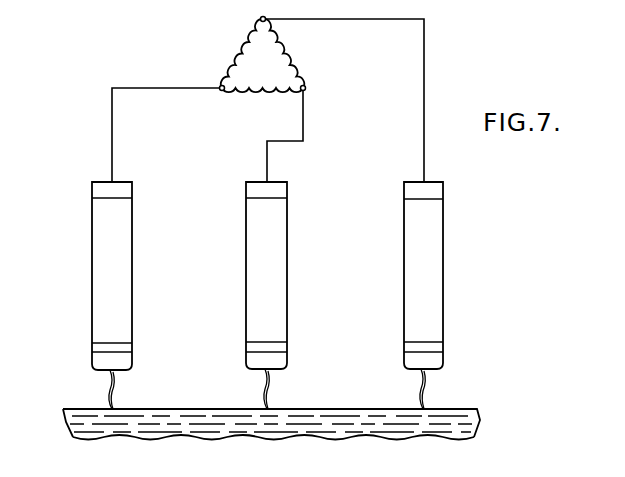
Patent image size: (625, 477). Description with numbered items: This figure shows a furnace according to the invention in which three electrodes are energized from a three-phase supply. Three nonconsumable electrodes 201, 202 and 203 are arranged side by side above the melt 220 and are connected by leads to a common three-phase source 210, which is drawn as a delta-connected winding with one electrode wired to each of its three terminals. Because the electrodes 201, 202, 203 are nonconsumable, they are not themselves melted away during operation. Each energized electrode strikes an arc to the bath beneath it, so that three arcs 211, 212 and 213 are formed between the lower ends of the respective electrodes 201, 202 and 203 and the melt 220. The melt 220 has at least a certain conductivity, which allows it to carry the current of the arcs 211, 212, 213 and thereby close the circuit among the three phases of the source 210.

The nonconsumable electrode 201 is at (92, 268).
The nonconsumable electrode 202 is at (246, 266).
The nonconsumable electrode 203 is at (405, 264).
The three-phase source 210 is at (278, 72).
The arc 211 is at (108, 384).
The arc 212 is at (262, 383).
The arc 213 is at (420, 383).
The melt 220 is at (478, 428).